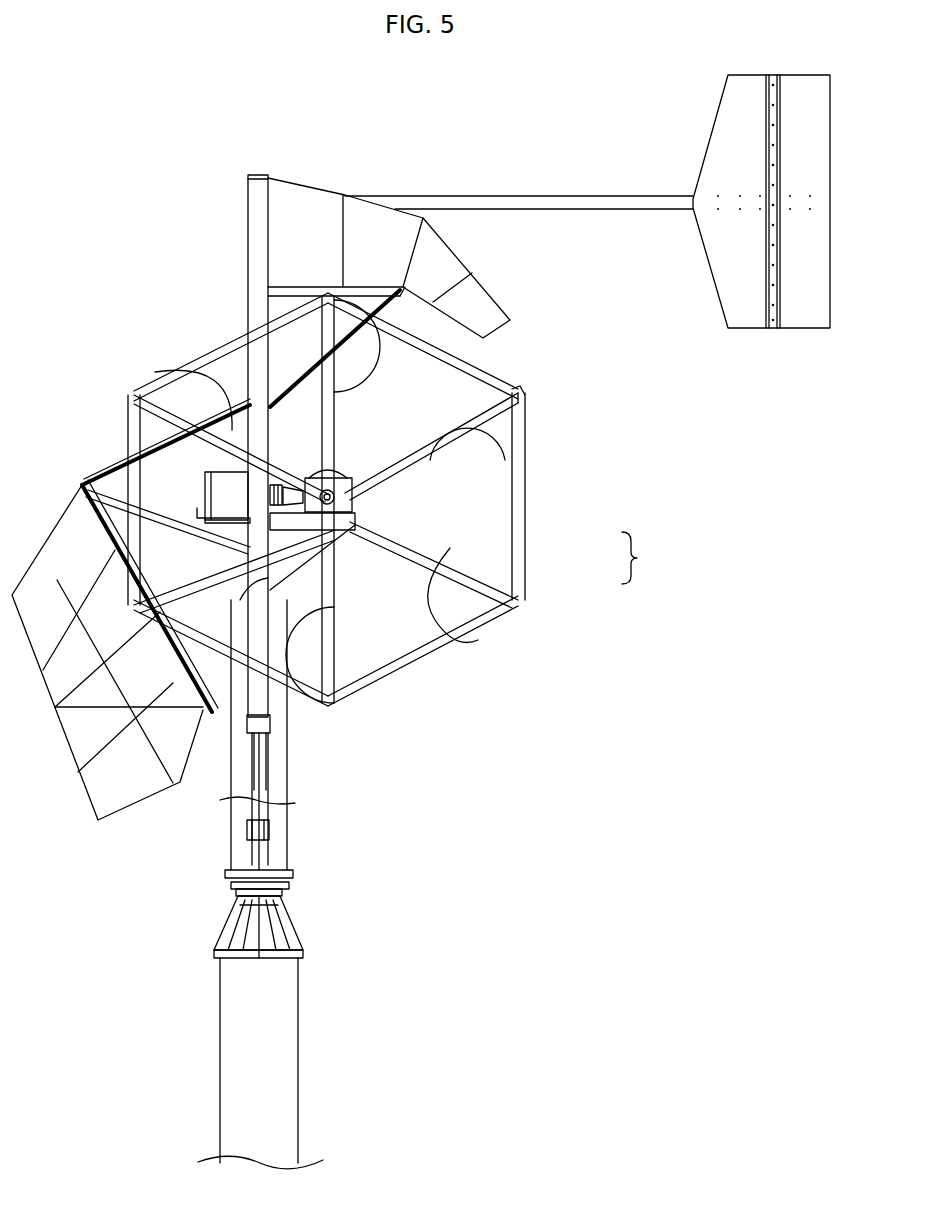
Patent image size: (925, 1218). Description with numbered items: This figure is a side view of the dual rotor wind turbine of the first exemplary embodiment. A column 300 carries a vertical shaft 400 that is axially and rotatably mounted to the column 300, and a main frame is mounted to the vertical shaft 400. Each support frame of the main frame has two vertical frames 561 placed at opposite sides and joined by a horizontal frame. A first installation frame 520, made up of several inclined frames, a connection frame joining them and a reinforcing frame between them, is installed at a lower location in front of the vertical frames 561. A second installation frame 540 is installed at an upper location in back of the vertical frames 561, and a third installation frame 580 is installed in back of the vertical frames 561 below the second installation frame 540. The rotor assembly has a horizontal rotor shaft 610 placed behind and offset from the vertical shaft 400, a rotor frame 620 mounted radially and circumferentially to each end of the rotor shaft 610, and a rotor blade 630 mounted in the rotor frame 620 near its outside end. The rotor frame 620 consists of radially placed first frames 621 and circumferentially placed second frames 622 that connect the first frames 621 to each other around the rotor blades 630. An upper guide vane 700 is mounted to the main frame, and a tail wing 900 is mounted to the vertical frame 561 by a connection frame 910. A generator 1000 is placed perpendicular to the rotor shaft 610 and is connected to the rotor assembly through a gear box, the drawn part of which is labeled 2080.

The column 300 is at (305, 916).
The vertical shaft 400 is at (292, 835).
The first installation frame 520 is at (78, 478).
The second installation frame 540 is at (445, 316).
The vertical frame 561 is at (250, 205).
The third installation frame 580 is at (300, 575).
The rotor shaft 610 is at (345, 505).
The rotor frame 620 is at (641, 558).
The first frame 621 is at (440, 560).
The second frame 622 is at (518, 558).
The rotor blade 630 is at (445, 612).
The upper guide vane 700 is at (303, 182).
The tail wing 900 is at (757, 340).
The connection frame 910 is at (483, 197).
The generator 1000 is at (228, 484).
The coupling 2080 is at (330, 480).